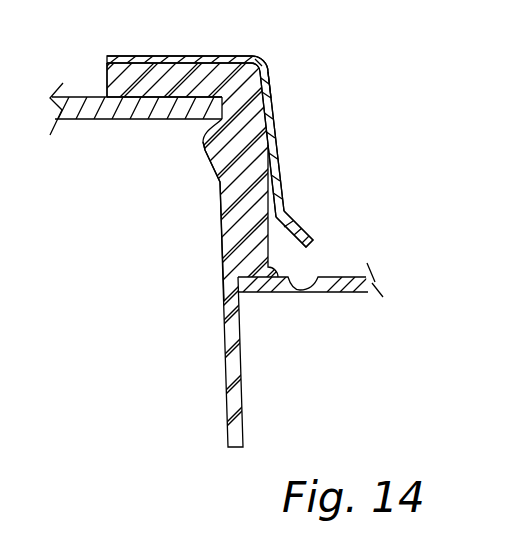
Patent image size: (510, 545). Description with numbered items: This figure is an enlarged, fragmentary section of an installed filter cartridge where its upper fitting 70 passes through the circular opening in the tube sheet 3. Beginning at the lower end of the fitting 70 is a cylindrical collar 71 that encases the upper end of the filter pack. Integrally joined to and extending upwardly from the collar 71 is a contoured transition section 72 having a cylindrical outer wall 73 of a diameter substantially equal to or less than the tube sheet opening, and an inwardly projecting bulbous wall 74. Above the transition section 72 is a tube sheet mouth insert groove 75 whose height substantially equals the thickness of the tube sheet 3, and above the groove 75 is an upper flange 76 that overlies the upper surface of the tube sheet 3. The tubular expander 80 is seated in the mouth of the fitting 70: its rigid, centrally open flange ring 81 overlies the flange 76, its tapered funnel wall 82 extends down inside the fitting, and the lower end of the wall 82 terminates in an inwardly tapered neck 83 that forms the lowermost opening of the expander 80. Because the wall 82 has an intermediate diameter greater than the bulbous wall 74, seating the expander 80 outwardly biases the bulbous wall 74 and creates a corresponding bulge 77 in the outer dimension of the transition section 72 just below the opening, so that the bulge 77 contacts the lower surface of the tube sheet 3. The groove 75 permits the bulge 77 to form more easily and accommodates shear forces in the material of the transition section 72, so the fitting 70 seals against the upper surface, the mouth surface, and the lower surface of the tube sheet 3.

The tube sheet 3 is at (98, 120).
The fitting 70 is at (146, 273).
The cylindrical collar 71 is at (237, 380).
The transition section 72 is at (247, 228).
The cylindrical outer wall 73 is at (218, 218).
The bulbous wall 74 is at (280, 162).
The tube sheet mouth insert groove 75 is at (185, 117).
The upper flange 76 is at (107, 87).
The bulge 77 is at (205, 143).
The tubular expander 80 is at (322, 63).
The flange ring 81 is at (170, 57).
The tapered funnel wall 82 is at (283, 118).
The inwardly tapered neck 83 is at (308, 231).